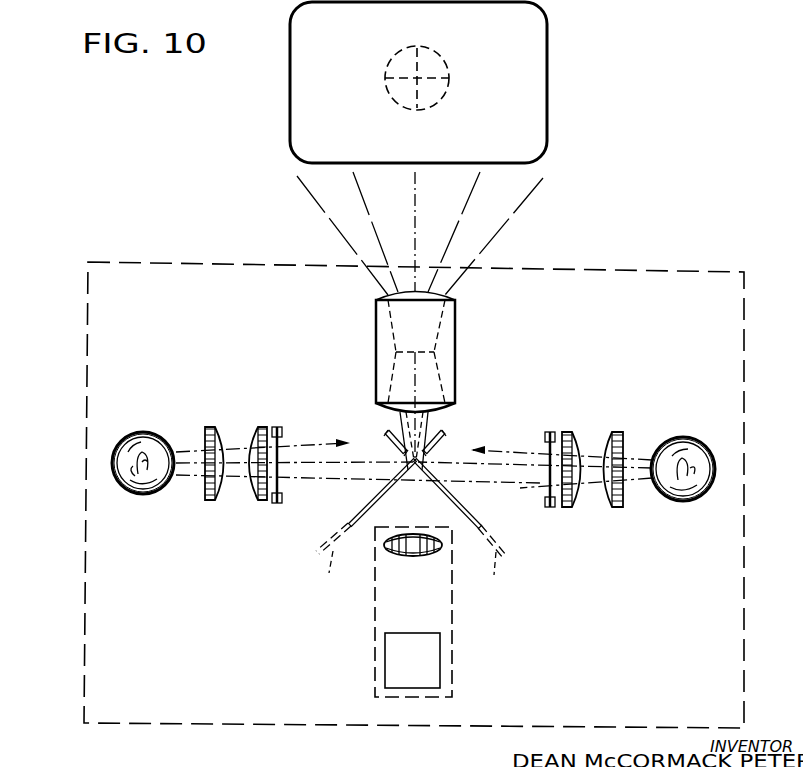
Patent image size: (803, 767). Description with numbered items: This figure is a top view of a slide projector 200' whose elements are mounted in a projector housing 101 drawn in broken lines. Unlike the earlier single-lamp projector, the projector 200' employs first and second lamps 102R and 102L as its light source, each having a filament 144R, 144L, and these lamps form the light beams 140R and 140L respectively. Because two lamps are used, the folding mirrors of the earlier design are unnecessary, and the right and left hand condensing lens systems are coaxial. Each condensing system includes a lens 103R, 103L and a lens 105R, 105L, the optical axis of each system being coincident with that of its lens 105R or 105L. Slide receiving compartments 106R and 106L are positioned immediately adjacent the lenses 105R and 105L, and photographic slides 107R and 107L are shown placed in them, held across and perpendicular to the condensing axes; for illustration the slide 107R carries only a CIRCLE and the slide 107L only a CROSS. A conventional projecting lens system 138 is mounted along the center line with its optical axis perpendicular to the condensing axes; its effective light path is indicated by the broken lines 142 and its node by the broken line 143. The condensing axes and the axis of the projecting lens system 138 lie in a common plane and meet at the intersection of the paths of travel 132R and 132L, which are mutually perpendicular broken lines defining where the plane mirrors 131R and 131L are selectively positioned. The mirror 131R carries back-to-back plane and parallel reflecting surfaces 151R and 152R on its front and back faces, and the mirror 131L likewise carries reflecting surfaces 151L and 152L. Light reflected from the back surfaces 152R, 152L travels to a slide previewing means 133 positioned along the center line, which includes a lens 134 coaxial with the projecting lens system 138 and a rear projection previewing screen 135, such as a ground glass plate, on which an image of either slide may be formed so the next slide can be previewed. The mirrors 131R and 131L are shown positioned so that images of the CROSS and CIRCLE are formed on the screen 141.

The slide projector 200' is at (145, 210).
The projector housing 101 is at (88, 290).
The screen 141 is at (305, 78).
The broken lines indicating effective light path 142 is at (392, 325).
The broken line indicating node 143 is at (416, 379).
The projecting lens system 138 is at (470, 343).
The left lamp 102L is at (157, 432).
The right lamp 102R is at (688, 407).
The filament 144L is at (132, 478).
The filament 144R is at (697, 498).
The lens 103L is at (212, 500).
The lens 103R is at (617, 508).
The lens 105L is at (258, 504).
The lens 105R is at (571, 508).
The slide receiving compartment 106L is at (277, 426).
The slide receiving compartment 106R is at (551, 431).
The photographic slide 107L is at (358, 450).
The photographic slide 107R is at (536, 452).
The light beam 140L is at (233, 441).
The light beam 140R is at (640, 448).
The front reflecting surface 151L is at (391, 476).
The front reflecting surface 151R is at (442, 476).
The back reflecting surface 152L is at (389, 488).
The back reflecting surface 152R is at (452, 508).
The plane mirror 131L is at (348, 518).
The plane mirror 131R is at (484, 518).
The path of travel 132L is at (336, 574).
The path of travel 132R is at (506, 576).
The slide previewing means 133 is at (452, 656).
The lens 134 is at (420, 558).
The rear projection previewing screen 135 is at (423, 634).